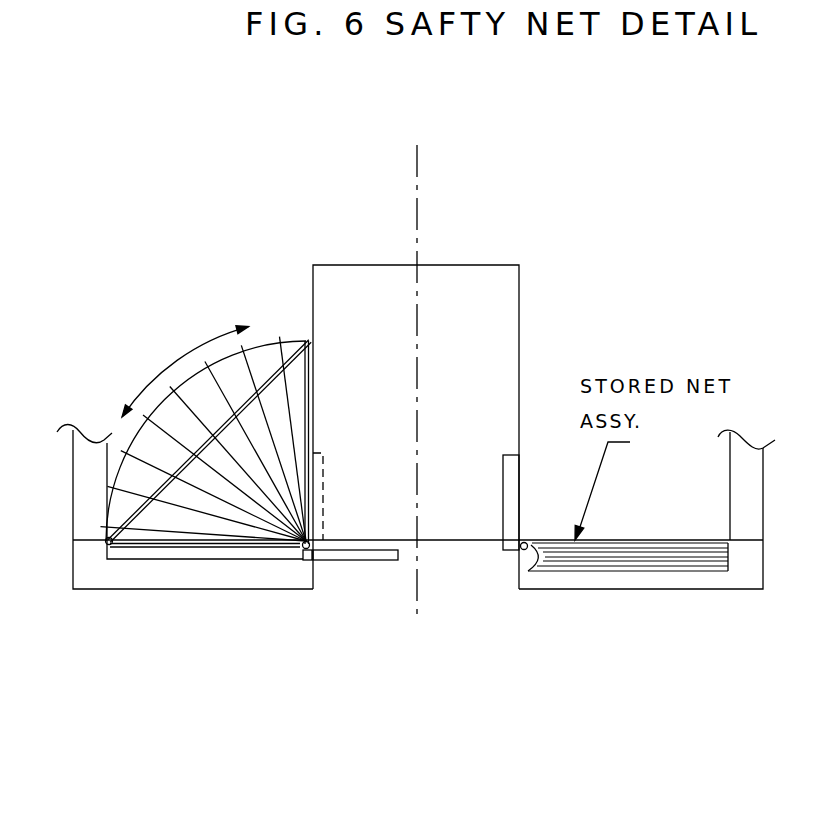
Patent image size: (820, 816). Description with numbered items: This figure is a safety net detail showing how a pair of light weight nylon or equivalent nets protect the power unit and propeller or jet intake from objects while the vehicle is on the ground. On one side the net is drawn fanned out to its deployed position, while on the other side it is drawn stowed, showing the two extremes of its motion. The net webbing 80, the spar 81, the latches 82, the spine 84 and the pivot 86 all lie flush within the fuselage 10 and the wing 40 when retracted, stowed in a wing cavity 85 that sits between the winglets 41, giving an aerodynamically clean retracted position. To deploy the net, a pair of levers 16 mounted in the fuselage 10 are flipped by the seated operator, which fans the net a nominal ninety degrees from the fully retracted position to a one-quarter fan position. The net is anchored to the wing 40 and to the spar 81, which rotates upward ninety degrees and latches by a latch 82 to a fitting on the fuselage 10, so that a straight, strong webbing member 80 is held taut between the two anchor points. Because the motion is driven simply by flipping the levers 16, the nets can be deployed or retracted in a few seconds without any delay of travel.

The fuselage 10 is at (475, 355).
The levers 16 is at (388, 549).
The wing 40 is at (747, 580).
The winglets 41 is at (747, 490).
The net webbing 80 is at (285, 376).
The spar 81 is at (310, 340).
The latch 82 is at (312, 340).
The spine 84 is at (168, 437).
The wing cavity 85 is at (243, 572).
The pivot 86 is at (518, 553).